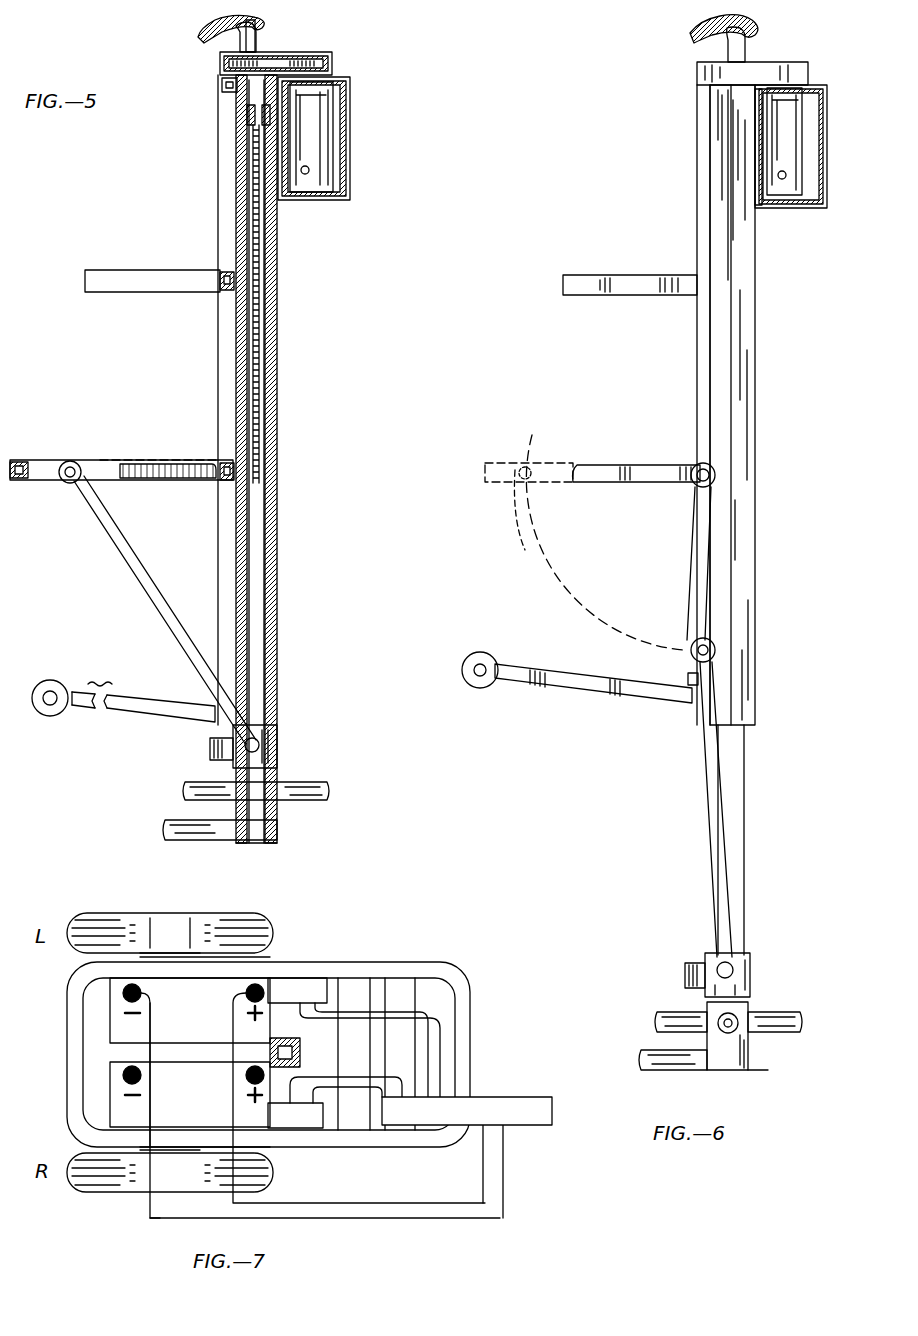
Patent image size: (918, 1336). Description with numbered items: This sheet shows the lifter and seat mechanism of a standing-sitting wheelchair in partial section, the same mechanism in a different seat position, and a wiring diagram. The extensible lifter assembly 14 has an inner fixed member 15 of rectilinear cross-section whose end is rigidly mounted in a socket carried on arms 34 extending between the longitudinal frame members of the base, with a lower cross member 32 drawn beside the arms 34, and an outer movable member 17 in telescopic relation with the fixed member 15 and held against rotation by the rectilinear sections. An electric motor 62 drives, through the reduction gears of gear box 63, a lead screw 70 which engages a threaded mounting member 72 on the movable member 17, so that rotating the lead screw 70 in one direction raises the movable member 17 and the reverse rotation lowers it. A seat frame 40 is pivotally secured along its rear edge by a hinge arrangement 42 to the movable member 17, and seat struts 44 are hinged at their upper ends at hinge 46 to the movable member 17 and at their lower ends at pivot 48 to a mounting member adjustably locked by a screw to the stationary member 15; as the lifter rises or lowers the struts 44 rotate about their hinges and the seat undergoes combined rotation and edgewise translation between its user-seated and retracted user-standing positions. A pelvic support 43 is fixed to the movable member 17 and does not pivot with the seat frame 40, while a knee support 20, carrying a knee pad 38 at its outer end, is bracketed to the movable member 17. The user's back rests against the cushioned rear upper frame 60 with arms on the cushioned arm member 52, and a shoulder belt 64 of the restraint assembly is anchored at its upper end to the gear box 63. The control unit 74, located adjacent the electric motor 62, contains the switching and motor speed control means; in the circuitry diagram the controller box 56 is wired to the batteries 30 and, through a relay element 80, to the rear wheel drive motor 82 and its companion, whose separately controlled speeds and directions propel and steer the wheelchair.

In FIG. 5, the extensible lifter assembly 14 is at (282, 349).
In FIG. 6, the extensible lifter assembly 14 is at (758, 352).
In FIG. 5, the inner fixed member 15 is at (262, 578).
In FIG. 6, the inner fixed member 15 is at (732, 770).
In FIG. 6, the outer movable member 17 is at (740, 396).
In FIG. 5, the knee support 20 is at (143, 720).
In FIG. 6, the knee support 20 is at (555, 690).
In FIG. 7, the batteries 30 is at (118, 1065).
In FIG. 5, the lower cross bar 32 is at (282, 822).
In FIG. 6, the lower cross bar 32 is at (748, 1040).
In FIG. 5, the arms 34 is at (318, 782).
In FIG. 6, the arms 34 is at (785, 1012).
In FIG. 5, the wheel 38 is at (55, 680).
In FIG. 6, the wheel 38 is at (462, 668).
In FIG. 5, the seat frame 40 is at (105, 460).
In FIG. 6, the seat frame 40 is at (510, 462).
In FIG. 5, the hinge arrangement 42 is at (226, 482).
In FIG. 6, the hinge arrangement 42 is at (698, 488).
In FIG. 5, the pelvic support 43 is at (163, 462).
In FIG. 6, the pelvic support 43 is at (585, 482).
In FIG. 5, the seat struts 44 is at (137, 582).
In FIG. 6, the seat struts 44 is at (710, 818).
In FIG. 5, the hinge 46 is at (65, 483).
In FIG. 6, the hinge 46 is at (522, 490).
In FIG. 5, the pivot 48 is at (262, 742).
In FIG. 6, the pivot 48 is at (735, 962).
In FIG. 5, the cushioned arm member 52 is at (167, 270).
In FIG. 6, the cushioned arm member 52 is at (650, 275).
In FIG. 7, the controller 56 is at (510, 1097).
In FIG. 5, the cushioned rear upper frame 60 is at (222, 146).
In FIG. 6, the cushioned rear upper frame 60 is at (702, 153).
In FIG. 5, the electric motor 62 is at (310, 142).
In FIG. 6, the electric motor 62 is at (790, 143).
In FIG. 5, the gear box 63 is at (325, 53).
In FIG. 6, the gear box 63 is at (793, 62).
In FIG. 5, the shoulder belt 64 is at (262, 24).
In FIG. 6, the shoulder belt 64 is at (755, 33).
In FIG. 5, the lead screw 70 is at (262, 225).
In FIG. 5, the threaded mounting member 72 is at (250, 112).
In FIG. 5, the control unit 74 is at (350, 110).
In FIG. 6, the control unit 74 is at (825, 113).
In FIG. 7, the relay 80 is at (310, 978).
In FIG. 7, the rear wheel drive motor 82 is at (300, 1128).